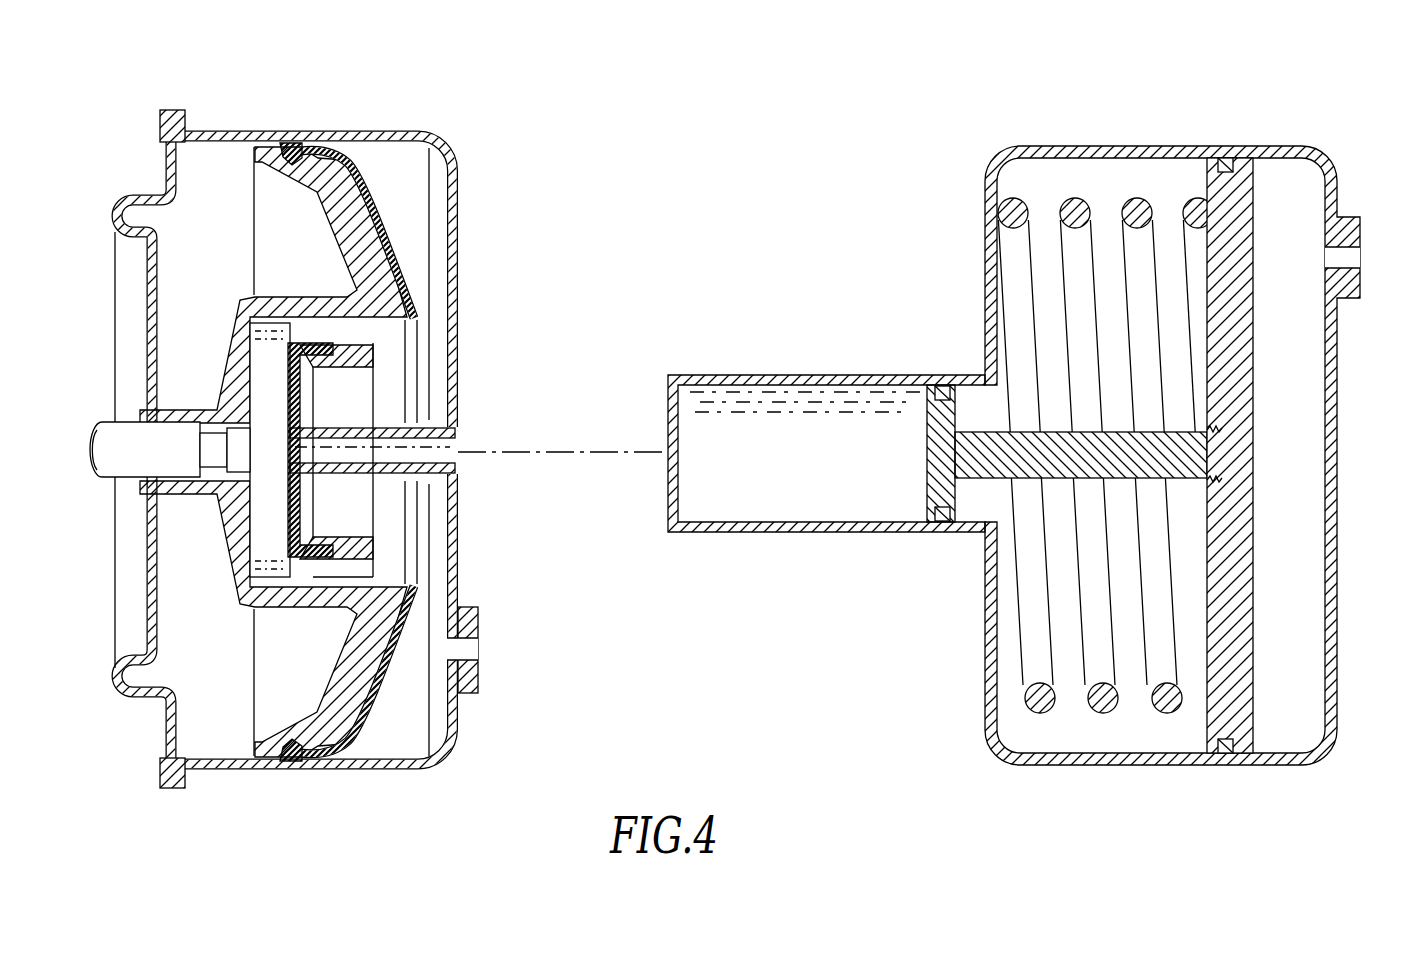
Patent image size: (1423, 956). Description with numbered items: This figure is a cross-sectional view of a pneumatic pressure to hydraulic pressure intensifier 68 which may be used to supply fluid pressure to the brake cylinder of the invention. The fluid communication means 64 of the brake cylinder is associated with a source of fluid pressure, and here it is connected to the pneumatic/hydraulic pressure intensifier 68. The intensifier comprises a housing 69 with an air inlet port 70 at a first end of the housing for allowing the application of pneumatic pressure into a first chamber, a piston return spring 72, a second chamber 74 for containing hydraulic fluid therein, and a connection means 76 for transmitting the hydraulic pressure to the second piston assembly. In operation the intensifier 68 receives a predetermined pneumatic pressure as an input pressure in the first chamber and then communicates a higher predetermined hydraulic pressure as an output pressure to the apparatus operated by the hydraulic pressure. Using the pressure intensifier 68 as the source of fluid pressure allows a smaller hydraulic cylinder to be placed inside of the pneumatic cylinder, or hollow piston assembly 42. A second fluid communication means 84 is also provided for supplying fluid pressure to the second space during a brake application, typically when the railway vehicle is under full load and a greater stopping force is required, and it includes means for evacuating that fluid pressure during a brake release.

The hollow piston assembly 42 is at (338, 178).
The fluid communication means 64 is at (437, 458).
The pneumatic/hydraulic pressure intensifier 68 is at (866, 299).
The housing 69 is at (1130, 147).
The air inlet port 70 is at (1350, 258).
The piston return spring 72 is at (1035, 655).
The second chamber 74 is at (784, 513).
The connection means 76 is at (575, 452).
The second fluid communication means 84 is at (470, 650).